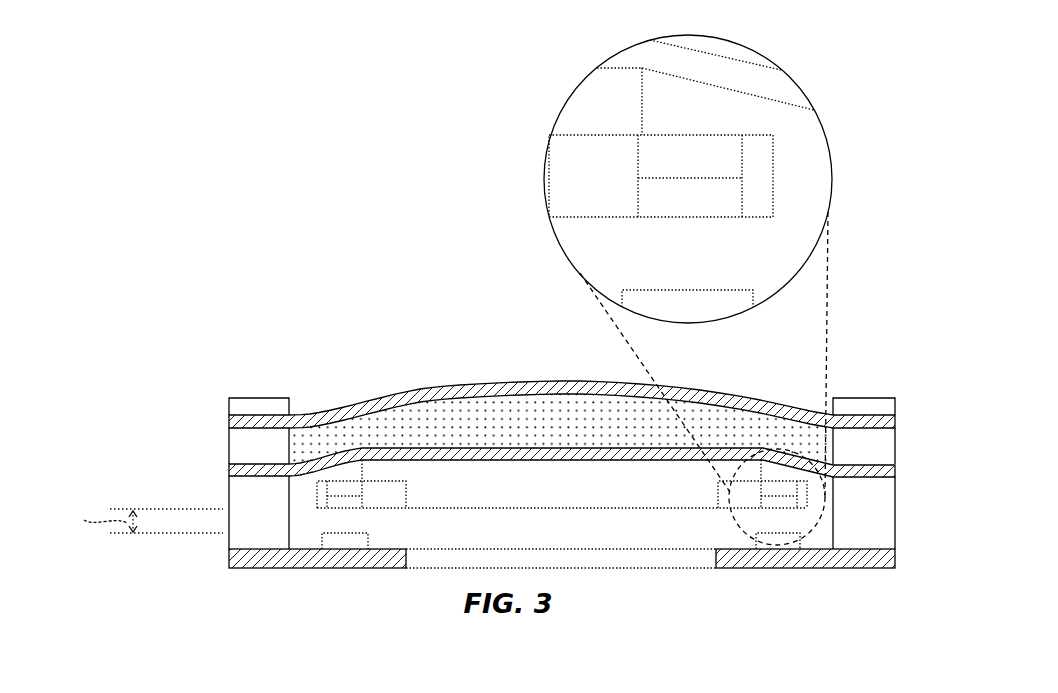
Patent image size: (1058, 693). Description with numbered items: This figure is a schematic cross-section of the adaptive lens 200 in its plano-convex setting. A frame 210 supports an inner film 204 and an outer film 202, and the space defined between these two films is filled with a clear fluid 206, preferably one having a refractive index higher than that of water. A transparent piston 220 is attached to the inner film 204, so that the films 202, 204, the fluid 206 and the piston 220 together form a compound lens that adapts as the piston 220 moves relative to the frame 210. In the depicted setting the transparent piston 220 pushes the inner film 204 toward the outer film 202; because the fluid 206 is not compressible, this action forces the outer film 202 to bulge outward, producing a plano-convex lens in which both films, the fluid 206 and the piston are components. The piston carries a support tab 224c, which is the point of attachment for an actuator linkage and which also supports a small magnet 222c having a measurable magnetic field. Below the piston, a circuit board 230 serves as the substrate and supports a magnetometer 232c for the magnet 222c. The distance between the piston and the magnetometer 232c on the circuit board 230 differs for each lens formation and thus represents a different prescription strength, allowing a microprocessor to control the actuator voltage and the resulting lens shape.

The adaptive lens 200 is at (297, 226).
The outer film 202 is at (895, 427).
The inner film 204 is at (895, 472).
The clear fluid 206 is at (382, 417).
The frame 210 is at (236, 440).
The transparent piston 220 is at (668, 487).
The magnet 222c is at (340, 490).
The support tab 224c is at (387, 500).
The circuit board 230 is at (253, 560).
The magnetometer 232c is at (335, 541).